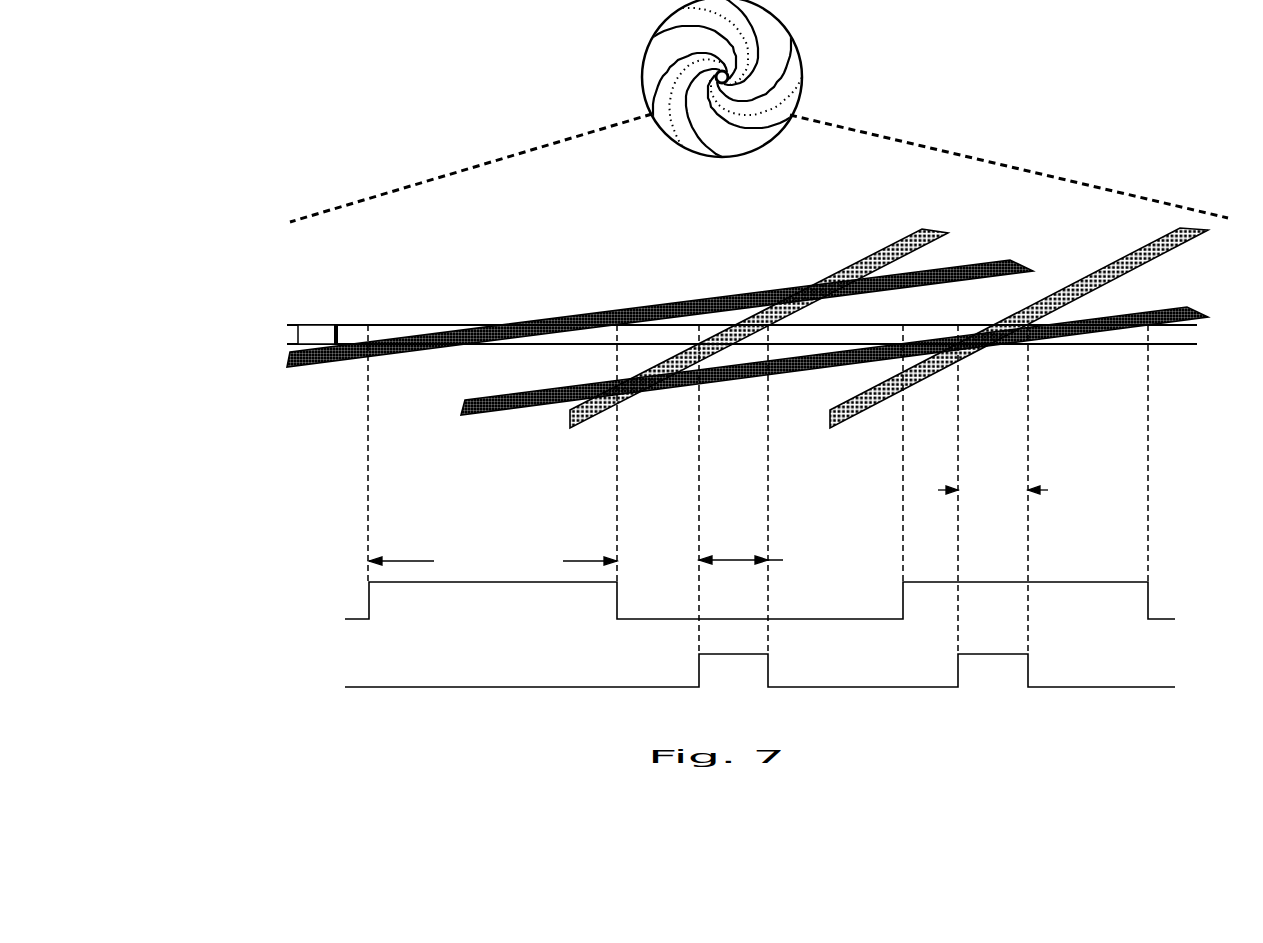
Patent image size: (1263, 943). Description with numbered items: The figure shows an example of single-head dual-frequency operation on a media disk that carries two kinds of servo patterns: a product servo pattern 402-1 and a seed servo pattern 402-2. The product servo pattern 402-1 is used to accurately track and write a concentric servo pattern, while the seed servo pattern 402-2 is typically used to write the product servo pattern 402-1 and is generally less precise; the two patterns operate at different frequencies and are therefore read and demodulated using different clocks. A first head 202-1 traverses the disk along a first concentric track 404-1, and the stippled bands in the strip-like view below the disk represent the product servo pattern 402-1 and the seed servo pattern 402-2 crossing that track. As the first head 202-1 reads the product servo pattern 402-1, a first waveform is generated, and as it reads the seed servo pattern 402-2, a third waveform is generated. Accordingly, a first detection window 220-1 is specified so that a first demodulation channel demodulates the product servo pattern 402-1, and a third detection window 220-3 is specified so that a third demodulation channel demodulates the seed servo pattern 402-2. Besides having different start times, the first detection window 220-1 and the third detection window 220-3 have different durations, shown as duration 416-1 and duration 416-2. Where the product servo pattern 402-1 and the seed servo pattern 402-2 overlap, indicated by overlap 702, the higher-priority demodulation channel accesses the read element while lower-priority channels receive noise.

The product servo pattern 402-1 is at (720, 297).
The seed servo pattern 402-2 is at (777, 68).
The first concentric track 404-1 is at (274, 335).
The first head 202-1 is at (317, 323).
The first detection window 220-1 is at (369, 607).
The third detection window 220-3 is at (369, 687).
The duration 416-1 is at (493, 559).
The duration 416-2 is at (778, 558).
The overlap 702 is at (993, 487).